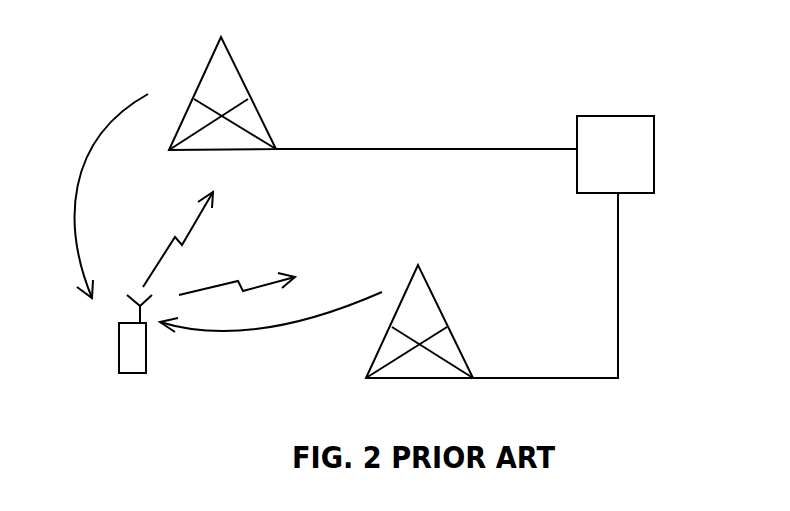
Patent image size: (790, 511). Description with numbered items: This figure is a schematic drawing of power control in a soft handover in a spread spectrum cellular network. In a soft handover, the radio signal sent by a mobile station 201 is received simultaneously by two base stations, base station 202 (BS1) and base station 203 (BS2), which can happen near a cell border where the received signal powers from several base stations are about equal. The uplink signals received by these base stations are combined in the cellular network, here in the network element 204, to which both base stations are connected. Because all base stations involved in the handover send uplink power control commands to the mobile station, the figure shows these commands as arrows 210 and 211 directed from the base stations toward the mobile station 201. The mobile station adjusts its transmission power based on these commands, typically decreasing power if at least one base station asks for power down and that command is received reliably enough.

The mobile station 201 is at (131, 351).
The base station BS1 202 is at (419, 337).
The base station BS2 203 is at (222, 106).
The network element 204 is at (615, 143).
The arrow representing power control command 210 is at (100, 196).
The arrow representing power control command 211 is at (271, 327).